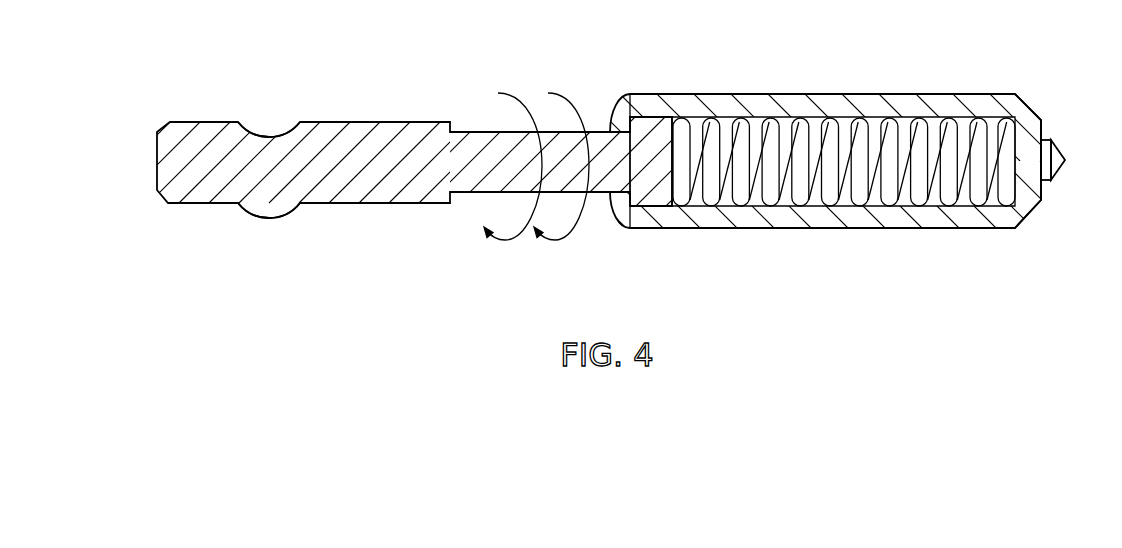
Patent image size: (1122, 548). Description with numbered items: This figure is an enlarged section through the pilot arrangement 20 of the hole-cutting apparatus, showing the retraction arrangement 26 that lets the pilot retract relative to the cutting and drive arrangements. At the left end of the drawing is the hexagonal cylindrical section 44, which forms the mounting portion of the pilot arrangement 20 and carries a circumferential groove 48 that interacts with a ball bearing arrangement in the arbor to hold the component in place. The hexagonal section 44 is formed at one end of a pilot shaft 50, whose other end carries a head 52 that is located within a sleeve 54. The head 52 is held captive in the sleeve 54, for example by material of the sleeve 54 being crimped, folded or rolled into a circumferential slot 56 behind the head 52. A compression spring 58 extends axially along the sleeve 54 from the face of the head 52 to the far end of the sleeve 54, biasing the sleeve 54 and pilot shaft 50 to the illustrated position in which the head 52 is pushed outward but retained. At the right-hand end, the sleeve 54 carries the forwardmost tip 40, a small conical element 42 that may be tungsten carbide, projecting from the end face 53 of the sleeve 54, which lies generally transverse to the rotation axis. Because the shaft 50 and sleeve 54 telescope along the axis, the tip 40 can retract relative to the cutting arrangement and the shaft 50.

The pilot arrangement 20 is at (410, 82).
The retraction arrangement 26 is at (657, 68).
The forwardmost tip 40 is at (1078, 134).
The conical element 42 is at (1060, 168).
The hexagonal cylindrical section 44 is at (204, 204).
The circumferential groove 48 is at (292, 123).
The pilot shaft 50 is at (478, 183).
The head 52 is at (640, 202).
The end face 53 is at (1043, 192).
The sleeve 54 is at (802, 229).
The circumferential slot 56 is at (552, 130).
The compression spring 58 is at (858, 130).